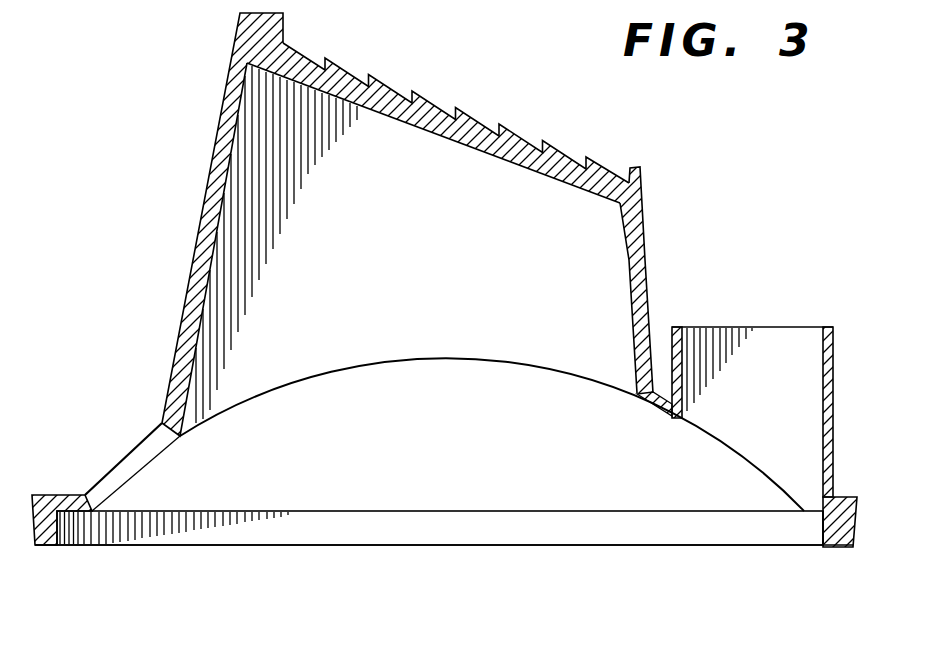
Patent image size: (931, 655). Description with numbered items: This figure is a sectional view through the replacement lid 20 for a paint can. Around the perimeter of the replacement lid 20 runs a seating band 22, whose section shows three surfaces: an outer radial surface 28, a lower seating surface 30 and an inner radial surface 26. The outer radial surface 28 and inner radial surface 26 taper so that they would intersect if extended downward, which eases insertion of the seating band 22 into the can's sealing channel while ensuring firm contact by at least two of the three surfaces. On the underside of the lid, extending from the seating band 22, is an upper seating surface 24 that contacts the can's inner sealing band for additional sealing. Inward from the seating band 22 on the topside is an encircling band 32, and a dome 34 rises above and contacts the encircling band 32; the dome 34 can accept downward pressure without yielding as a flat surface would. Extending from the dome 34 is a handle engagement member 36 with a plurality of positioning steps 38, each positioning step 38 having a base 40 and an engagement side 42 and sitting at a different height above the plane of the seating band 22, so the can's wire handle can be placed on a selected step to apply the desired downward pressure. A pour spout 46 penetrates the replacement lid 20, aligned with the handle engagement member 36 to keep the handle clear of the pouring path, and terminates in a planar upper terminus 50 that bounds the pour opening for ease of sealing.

The replacement lid 20 is at (755, 113).
The seating band 22 is at (35, 548).
The upper seating surface 24 is at (81, 515).
The inner radial surface 26 is at (824, 532).
The outer radial surface 28 is at (856, 524).
The lower seating surface 30 is at (40, 546).
The encircling band 32 is at (62, 494).
The dome 34 is at (126, 452).
The handle engagement member 36 is at (188, 286).
The positioning step 38 is at (423, 90).
The base 40 is at (562, 150).
The engagement side 42 is at (530, 140).
The pour spout 46 is at (833, 420).
The upper terminus 50 is at (783, 327).